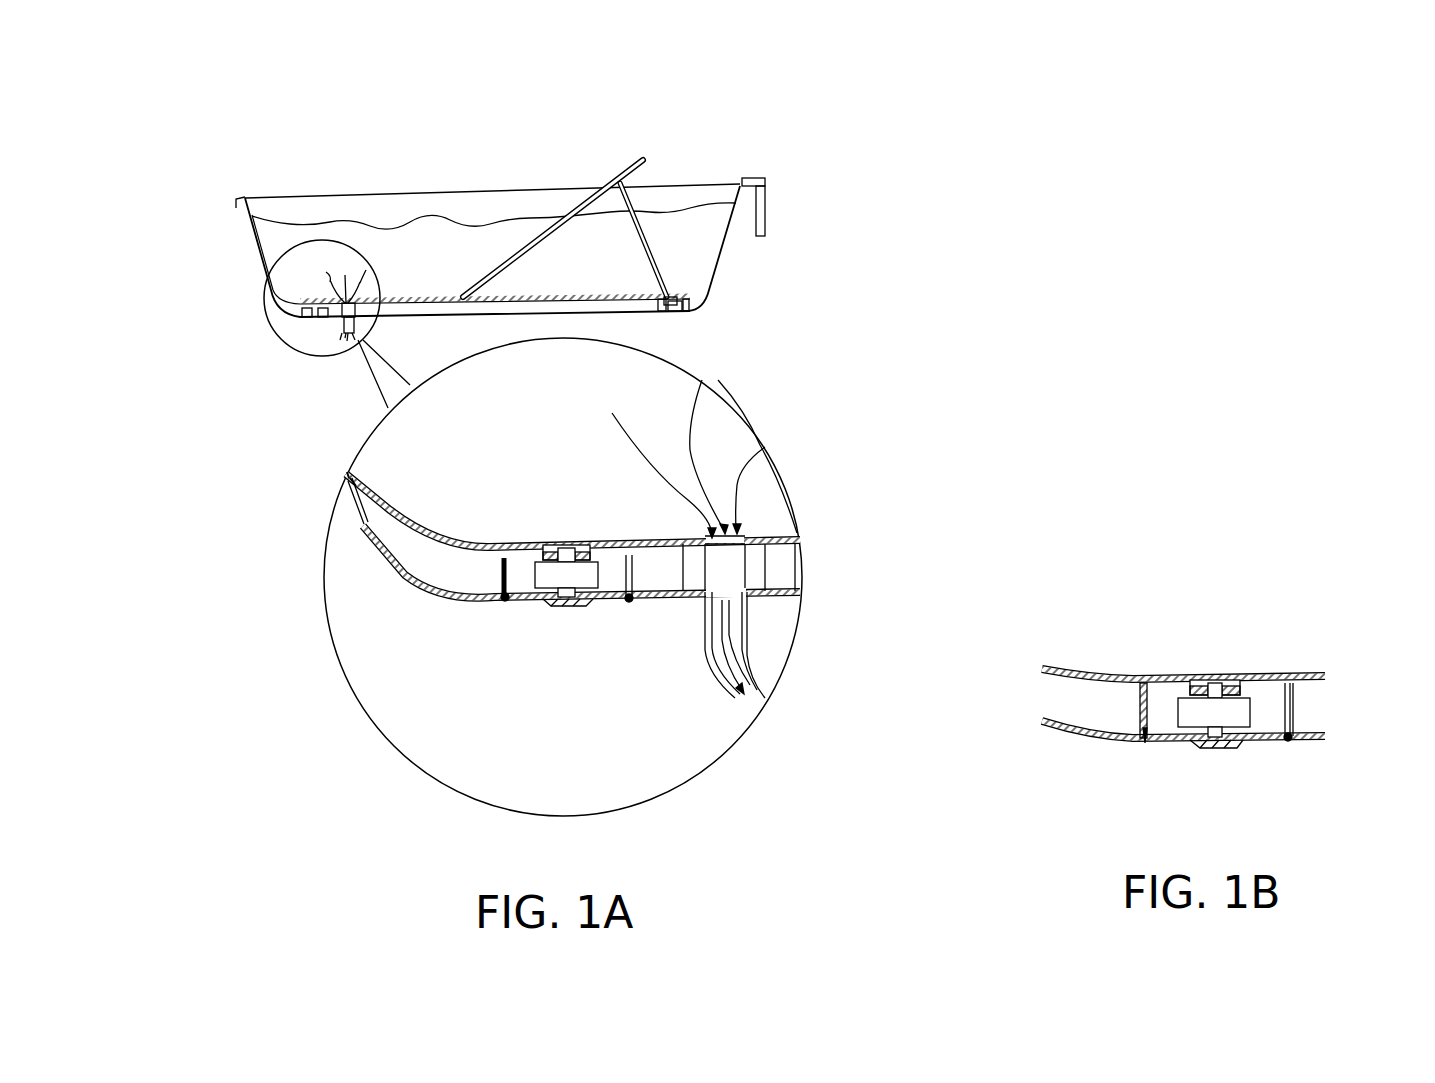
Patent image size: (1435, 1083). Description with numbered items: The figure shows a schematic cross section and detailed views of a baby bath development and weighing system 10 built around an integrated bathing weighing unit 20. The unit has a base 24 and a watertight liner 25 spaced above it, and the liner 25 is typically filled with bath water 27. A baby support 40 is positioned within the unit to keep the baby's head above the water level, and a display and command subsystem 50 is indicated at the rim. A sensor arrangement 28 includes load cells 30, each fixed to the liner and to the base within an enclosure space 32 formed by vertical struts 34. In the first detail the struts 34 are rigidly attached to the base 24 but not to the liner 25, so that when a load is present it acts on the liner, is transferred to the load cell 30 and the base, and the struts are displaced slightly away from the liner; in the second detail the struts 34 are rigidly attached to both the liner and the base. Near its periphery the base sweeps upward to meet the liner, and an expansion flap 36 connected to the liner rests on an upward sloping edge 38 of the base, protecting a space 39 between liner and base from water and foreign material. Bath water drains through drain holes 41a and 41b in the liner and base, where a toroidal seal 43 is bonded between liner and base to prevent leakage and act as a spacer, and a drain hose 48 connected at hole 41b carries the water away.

In FIG. 1A, the baby bath development and weighing system 10 is at (203, 135).
In FIG. 1A, the integrated bathing weighing unit 20 is at (733, 237).
In FIG. 1A, the base 24 is at (416, 601).
In FIG. 1B, the base 24 is at (1057, 741).
In FIG. 1A, the watertight liner 25 is at (410, 540).
In FIG. 1B, the watertight liner 25 is at (1045, 665).
In FIG. 1A, the bath water 27 is at (395, 218).
In FIG. 1A, the sensor arrangement 28 is at (544, 503).
In FIG. 1A, the load cell 30 is at (560, 572).
In FIG. 1B, the load cell 30 is at (1223, 707).
In FIG. 1B, the enclosure space 32 is at (1167, 697).
In FIG. 1A, the vertical struts 34 is at (627, 597).
In FIG. 1B, the vertical struts 34 is at (1283, 747).
In FIG. 1A, the expansion flap 36 is at (347, 502).
In FIG. 1A, the upward sloping edge 38 is at (363, 522).
In FIG. 1A, the space 39 is at (358, 497).
In FIG. 1A, the baby support 40 is at (623, 182).
In FIG. 1A, the drain hole 41a is at (741, 532).
In FIG. 1A, the drain hole 41b is at (768, 597).
In FIG. 1A, the toroidal seal 43 is at (760, 567).
In FIG. 1A, the drain hose 48 is at (735, 683).
In FIG. 1A, the display and command subsystem 50 is at (768, 198).